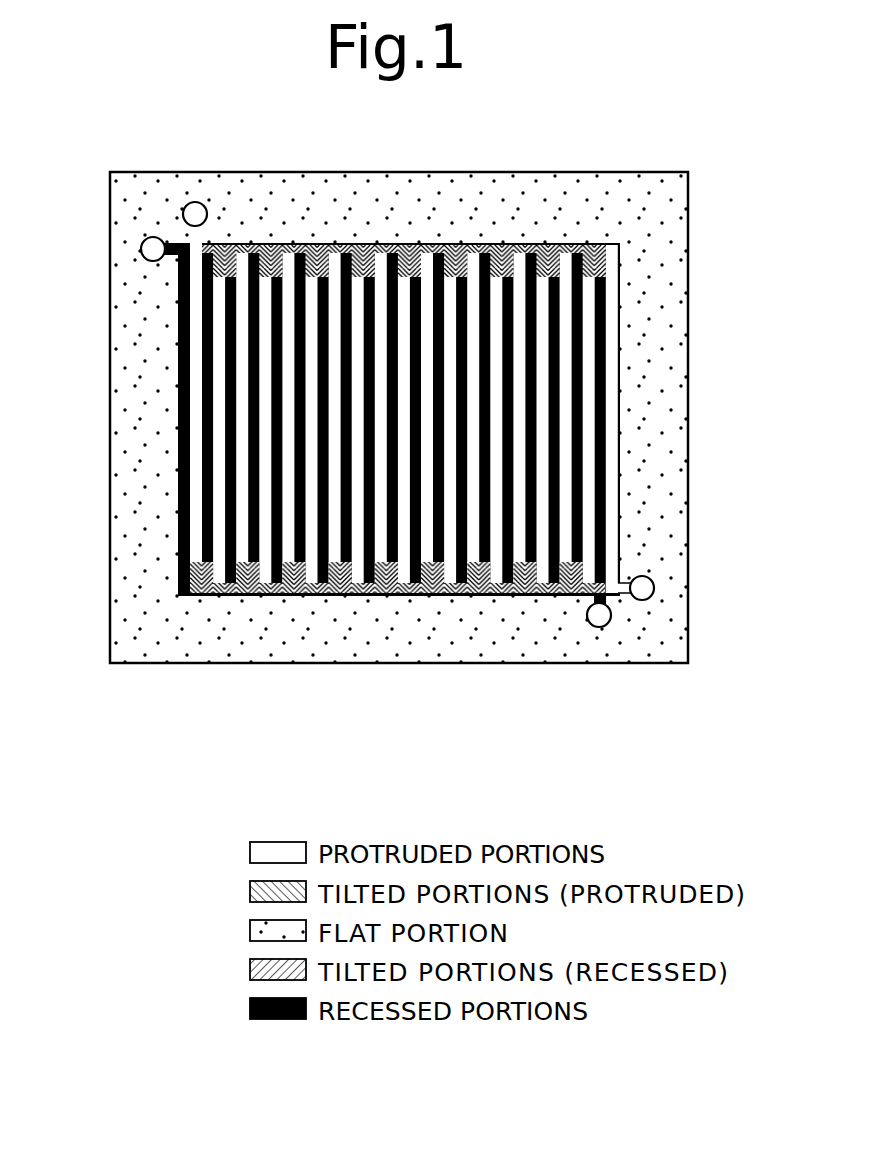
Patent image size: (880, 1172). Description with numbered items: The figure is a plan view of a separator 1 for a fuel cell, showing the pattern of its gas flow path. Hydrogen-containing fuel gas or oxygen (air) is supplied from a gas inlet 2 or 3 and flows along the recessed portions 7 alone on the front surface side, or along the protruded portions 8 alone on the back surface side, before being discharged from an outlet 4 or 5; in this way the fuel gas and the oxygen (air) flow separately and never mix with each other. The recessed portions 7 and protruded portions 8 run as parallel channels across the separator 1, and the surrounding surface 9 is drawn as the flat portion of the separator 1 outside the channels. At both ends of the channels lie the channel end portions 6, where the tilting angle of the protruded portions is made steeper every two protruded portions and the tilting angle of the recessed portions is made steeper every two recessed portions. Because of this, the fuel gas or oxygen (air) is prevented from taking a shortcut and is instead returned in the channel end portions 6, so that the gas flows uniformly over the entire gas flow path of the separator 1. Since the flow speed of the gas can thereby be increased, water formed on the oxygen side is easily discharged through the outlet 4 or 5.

The separator 1 is at (682, 218).
The gas inlet 2 is at (152, 249).
The gas inlet 3 is at (195, 214).
The outlet 4 is at (601, 627).
The outlet 5 is at (644, 588).
The channel end portions 6 is at (203, 240).
The recessed portions 7 is at (178, 372).
The protruded portions 8 is at (196, 455).
The flat portion 9 is at (668, 378).